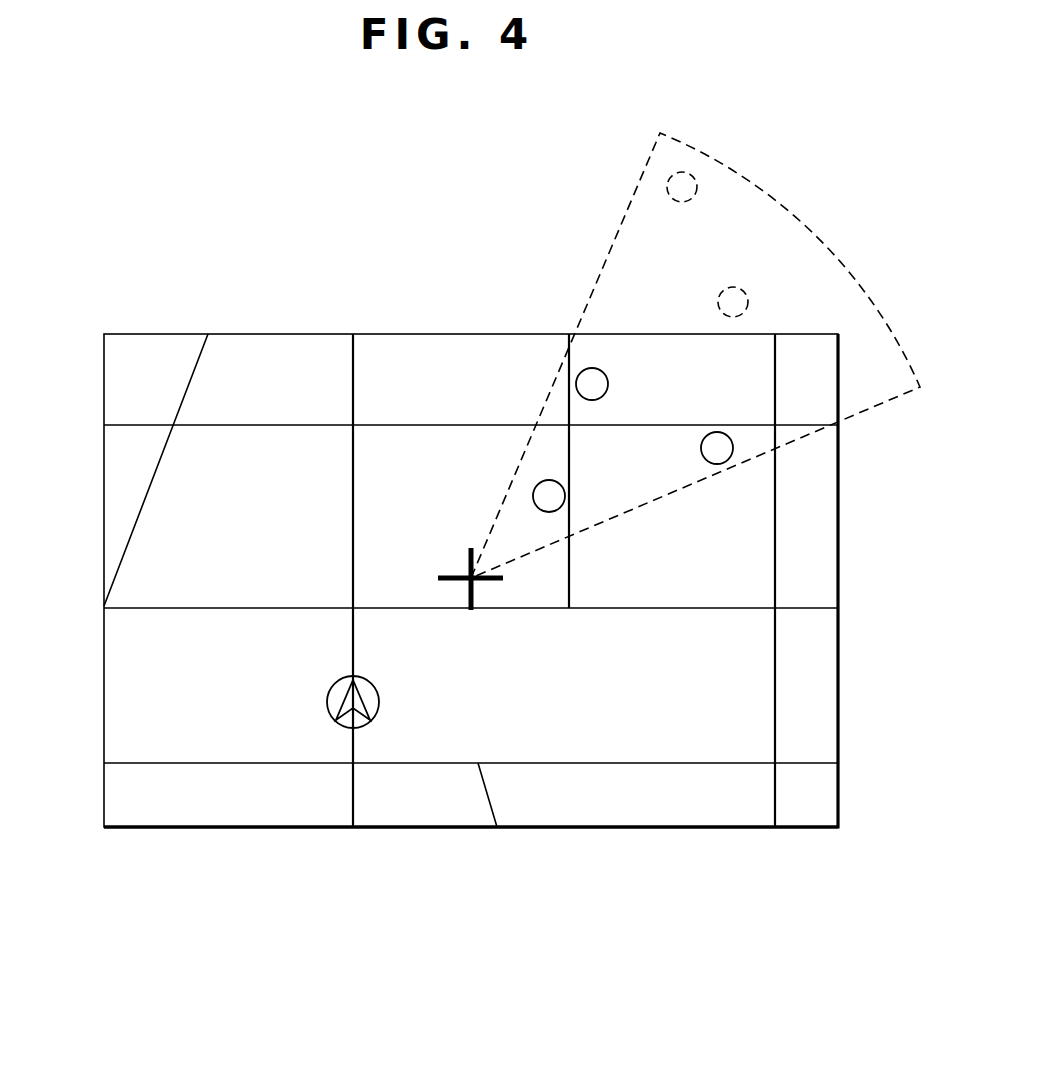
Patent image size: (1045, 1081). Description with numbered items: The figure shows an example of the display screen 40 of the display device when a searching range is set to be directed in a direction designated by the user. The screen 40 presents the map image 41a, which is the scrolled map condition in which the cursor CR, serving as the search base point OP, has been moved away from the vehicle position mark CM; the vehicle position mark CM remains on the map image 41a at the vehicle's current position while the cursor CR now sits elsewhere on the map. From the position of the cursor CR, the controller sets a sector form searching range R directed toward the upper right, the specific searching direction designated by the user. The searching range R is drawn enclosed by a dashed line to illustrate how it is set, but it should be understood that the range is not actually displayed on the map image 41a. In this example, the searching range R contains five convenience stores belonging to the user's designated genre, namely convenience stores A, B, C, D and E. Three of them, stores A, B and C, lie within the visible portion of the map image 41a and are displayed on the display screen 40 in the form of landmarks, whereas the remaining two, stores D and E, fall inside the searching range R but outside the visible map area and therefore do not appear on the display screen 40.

The display screen 40 is at (323, 310).
The map image 41a is at (838, 836).
The vehicle position mark CM is at (327, 700).
The searching range R is at (826, 228).
The convenience store A is at (538, 487).
The convenience store B is at (592, 368).
The convenience store C is at (724, 460).
The convenience store D is at (748, 300).
The convenience store E is at (667, 186).